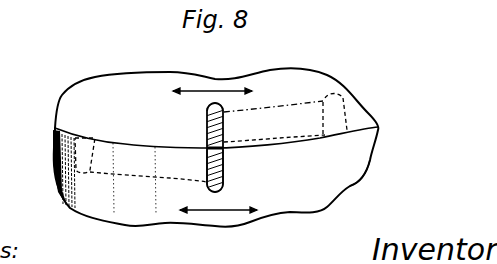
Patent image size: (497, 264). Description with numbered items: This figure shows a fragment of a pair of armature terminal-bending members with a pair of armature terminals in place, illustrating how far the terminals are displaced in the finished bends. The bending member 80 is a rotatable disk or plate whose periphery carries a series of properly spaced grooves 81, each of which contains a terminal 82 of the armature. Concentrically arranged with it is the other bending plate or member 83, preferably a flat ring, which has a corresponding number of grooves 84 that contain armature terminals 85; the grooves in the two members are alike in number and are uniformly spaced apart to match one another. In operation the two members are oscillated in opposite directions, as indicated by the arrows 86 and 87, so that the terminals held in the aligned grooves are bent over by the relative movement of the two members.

The armature terminal-bending member 80 is at (303, 82).
The grooves 81 is at (217, 102).
The terminals 82 is at (223, 124).
The bending plate or member 83 is at (348, 183).
The grooves 84 is at (216, 189).
The armature terminals 85 is at (223, 167).
The arrow 86 is at (192, 97).
The arrow 87 is at (207, 211).